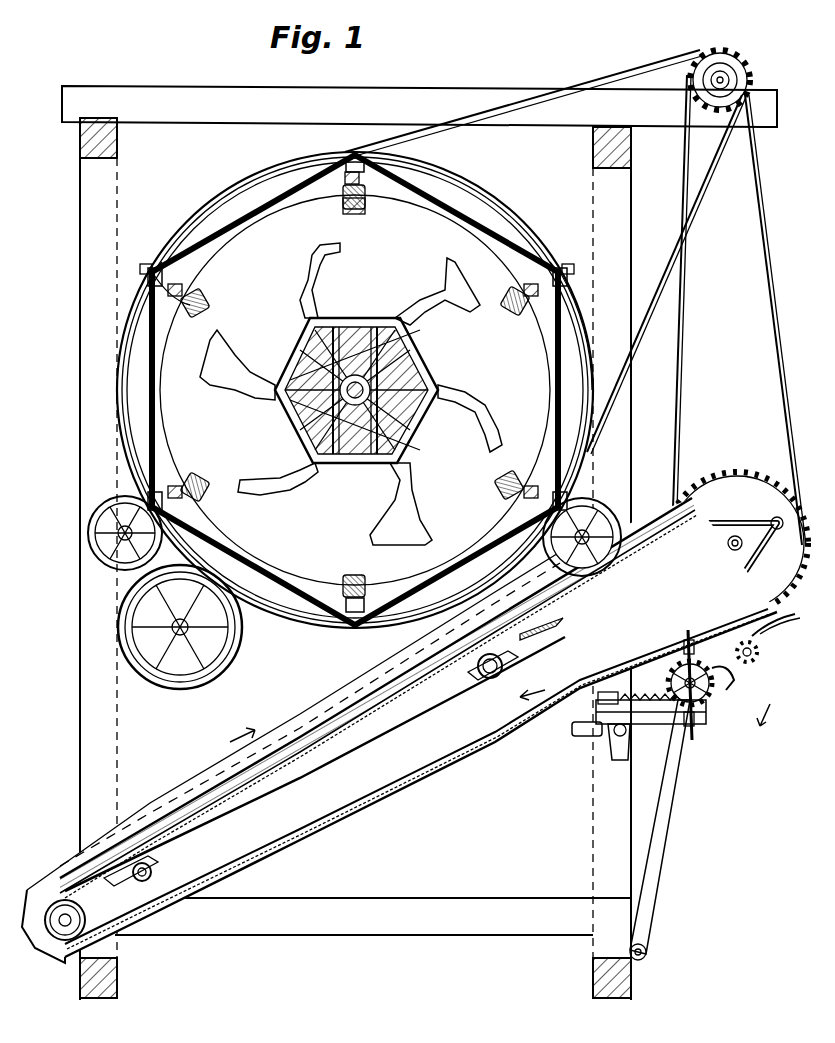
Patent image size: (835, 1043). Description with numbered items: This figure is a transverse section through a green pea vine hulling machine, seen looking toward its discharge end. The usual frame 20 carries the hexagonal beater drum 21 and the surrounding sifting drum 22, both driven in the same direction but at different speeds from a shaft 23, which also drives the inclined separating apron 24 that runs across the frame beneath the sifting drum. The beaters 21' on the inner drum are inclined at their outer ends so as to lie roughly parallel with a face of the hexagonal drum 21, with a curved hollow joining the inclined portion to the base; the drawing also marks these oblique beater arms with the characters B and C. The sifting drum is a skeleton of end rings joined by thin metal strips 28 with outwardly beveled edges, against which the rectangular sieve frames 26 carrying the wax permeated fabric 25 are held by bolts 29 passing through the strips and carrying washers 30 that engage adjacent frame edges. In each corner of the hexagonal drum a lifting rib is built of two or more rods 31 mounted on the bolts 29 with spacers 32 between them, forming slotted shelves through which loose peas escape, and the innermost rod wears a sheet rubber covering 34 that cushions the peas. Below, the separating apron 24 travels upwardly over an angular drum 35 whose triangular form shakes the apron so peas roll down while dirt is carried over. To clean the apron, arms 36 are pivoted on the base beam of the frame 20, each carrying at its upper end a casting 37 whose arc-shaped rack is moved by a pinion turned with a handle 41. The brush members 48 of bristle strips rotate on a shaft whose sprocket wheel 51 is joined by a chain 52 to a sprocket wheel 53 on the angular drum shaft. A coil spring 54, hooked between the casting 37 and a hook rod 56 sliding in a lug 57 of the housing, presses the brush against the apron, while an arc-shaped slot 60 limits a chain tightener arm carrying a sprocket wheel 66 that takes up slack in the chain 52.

The frame 20 is at (466, 925).
The hexagonal beater drum 21 is at (367, 390).
The beaters 21' is at (278, 333).
The sifting drum 22 is at (480, 200).
The shaft 23 is at (722, 78).
The inclined separating apron 24 is at (600, 576).
The wax permeated fabric 25 is at (154, 402).
The sieve frames 26 is at (118, 398).
The metal strips 28 is at (176, 280).
The bolts 29 is at (146, 270).
The washers 30 is at (160, 266).
The rods or bars 31 is at (342, 185).
The spacers 32 is at (362, 190).
The sheet rubber covering 34 is at (208, 302).
The angular drum 35 is at (716, 540).
The arms 36 is at (668, 832).
The casting 37 is at (640, 722).
The handle 41 is at (618, 762).
The brush members 48 is at (684, 646).
The sprocket wheel 51 is at (700, 666).
The chain 52 is at (760, 640).
The sprocket wheel 53 is at (762, 630).
The coil spring 54 is at (650, 698).
The hook rod 56 is at (580, 712).
The lug 57 is at (620, 702).
The arc-shaped slot 60 is at (728, 688).
The sprocket wheel 66 is at (756, 658).
The rotor blade B is at (302, 286).
The rotor blade C is at (240, 372).